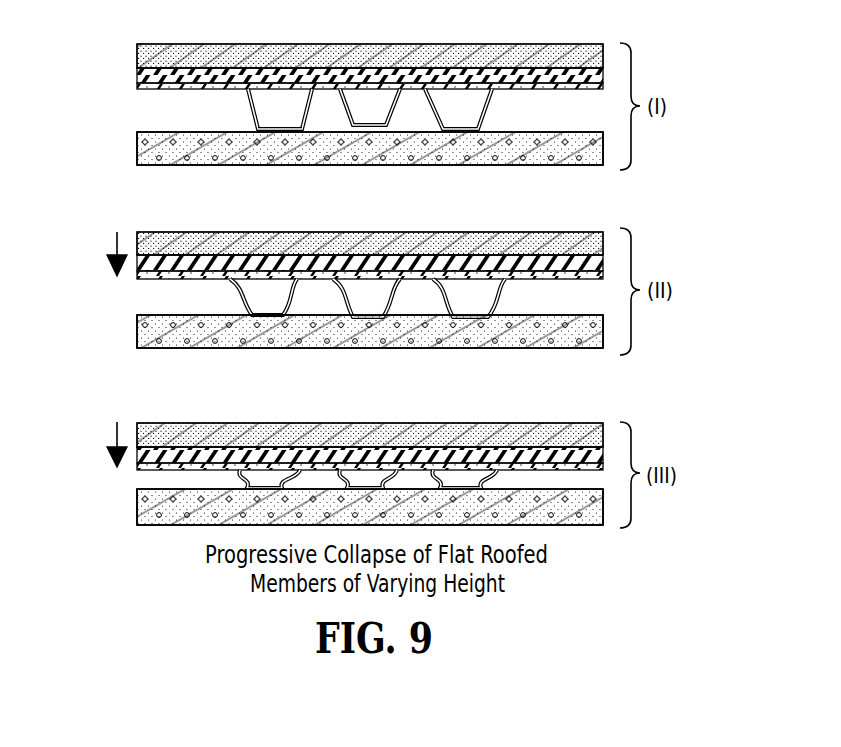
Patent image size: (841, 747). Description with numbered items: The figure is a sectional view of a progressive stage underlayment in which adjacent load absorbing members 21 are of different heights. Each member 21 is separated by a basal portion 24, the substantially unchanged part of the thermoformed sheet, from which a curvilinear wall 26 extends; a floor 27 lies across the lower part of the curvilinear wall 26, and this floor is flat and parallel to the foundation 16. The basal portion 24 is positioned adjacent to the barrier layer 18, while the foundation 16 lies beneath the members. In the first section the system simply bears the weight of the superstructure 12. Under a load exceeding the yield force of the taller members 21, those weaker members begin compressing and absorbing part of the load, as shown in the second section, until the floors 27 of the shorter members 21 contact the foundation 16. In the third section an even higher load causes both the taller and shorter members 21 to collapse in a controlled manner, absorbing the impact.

The superstructure 12 is at (563, 44).
The foundation 16 is at (583, 167).
The barrier layer 18 is at (582, 90).
The basal portion 24 is at (138, 88).
The curvilinear wall 26 is at (308, 104).
The floor 27 is at (283, 132).
The load absorbing member 21 is at (488, 107).